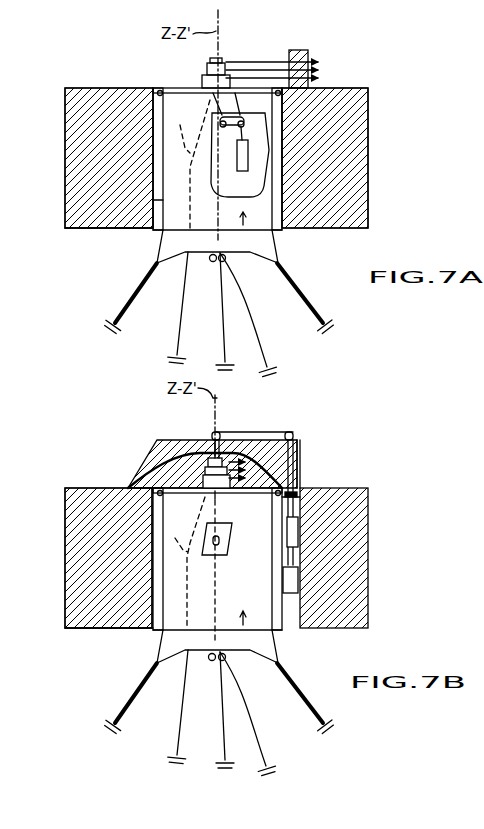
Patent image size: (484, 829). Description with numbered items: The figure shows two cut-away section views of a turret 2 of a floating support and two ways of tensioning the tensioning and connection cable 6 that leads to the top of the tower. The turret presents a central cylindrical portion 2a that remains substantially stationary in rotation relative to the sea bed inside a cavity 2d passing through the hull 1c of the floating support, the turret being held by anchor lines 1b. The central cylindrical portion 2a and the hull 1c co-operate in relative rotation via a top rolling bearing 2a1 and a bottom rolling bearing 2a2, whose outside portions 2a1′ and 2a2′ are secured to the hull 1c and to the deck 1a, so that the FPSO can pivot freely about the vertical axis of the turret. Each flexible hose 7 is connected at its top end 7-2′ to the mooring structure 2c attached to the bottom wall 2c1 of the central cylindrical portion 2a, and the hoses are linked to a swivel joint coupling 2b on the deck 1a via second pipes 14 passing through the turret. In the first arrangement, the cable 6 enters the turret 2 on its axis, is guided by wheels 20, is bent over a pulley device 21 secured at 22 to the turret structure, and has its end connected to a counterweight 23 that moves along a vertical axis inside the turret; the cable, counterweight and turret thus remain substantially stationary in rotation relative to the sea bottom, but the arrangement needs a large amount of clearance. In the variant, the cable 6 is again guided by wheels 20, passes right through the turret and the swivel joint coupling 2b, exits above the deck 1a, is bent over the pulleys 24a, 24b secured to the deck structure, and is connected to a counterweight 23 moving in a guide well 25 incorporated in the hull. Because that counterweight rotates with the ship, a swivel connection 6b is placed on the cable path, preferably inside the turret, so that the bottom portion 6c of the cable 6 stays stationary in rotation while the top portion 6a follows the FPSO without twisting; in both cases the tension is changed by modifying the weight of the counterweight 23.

In FIG. 7A, the turret 2 is at (50, 74).
In FIG. 7B, the turret 2 is at (112, 471).
In FIG. 7A, the central cylindrical portion 2a is at (160, 166).
In FIG. 7B, the central cylindrical portion 2a is at (163, 583).
In FIG. 7A, the top rolling bearing 2a1 is at (155, 80).
In FIG. 7B, the top rolling bearing 2a1 is at (145, 504).
In FIG. 7A, the outside portion of top rolling bearing 2a1′ is at (152, 97).
In FIG. 7B, the outside portion of top rolling bearing 2a1′ is at (150, 497).
In FIG. 7A, the bottom rolling bearing 2a2 is at (163, 232).
In FIG. 7B, the bottom rolling bearing 2a2 is at (162, 631).
In FIG. 7A, the outside portion of bottom rolling bearing 2a2′ is at (121, 226).
In FIG. 7A, the swivel joint coupling 2b is at (205, 77).
In FIG. 7B, the swivel joint coupling 2b is at (165, 463).
In FIG. 7A, the mooring structure 2c is at (263, 237).
In FIG. 7B, the mooring structure 2c is at (263, 637).
In FIG. 7A, the bottom wall 2c1 is at (163, 218).
In FIG. 7B, the bottom wall 2c1 is at (162, 635).
In FIG. 7A, the cavity 2d is at (160, 132).
In FIG. 7B, the cavity 2d is at (308, 548).
In FIG. 7A, the deck 1a is at (331, 88).
In FIG. 7A, the anchor line 1b is at (123, 308).
In FIG. 7B, the anchor line 1b is at (125, 702).
In FIG. 7A, the hull 1c is at (352, 153).
In FIG. 7A, the tensioning and connection cable 6 is at (370, 91).
In FIG. 7B, the tensioning and connection cable 6 is at (302, 472).
In FIG. 7B, the top portion of the cable 6a is at (215, 508).
In FIG. 7B, the swivel connection 6b is at (219, 538).
In FIG. 7B, the bottom portion of the cable 6c is at (217, 582).
In FIG. 7A, the flexible hose 7 is at (180, 337).
In FIG. 7B, the flexible hose 7 is at (178, 733).
In FIG. 7A, the top end of flexible hose 7-2′ is at (185, 258).
In FIG. 7B, the top end of flexible hose 7-2′ is at (182, 656).
In FIG. 7A, the second pipes 14 is at (383, 218).
In FIG. 7B, the second pipes 14 is at (207, 562).
In FIG. 7A, the wheels 20 is at (221, 264).
In FIG. 7B, the wheels 20 is at (221, 662).
In FIG. 7A, the pulley device 21 is at (302, 82).
In FIG. 7A, the securing point of pulley device 22 is at (233, 98).
In FIG. 7A, the counterweight 23 is at (244, 128).
In FIG. 7B, the counterweight 23 is at (298, 533).
In FIG. 7B, the pulley 24a is at (215, 432).
In FIG. 7B, the pulley 24b is at (294, 432).
In FIG. 7B, the guide well 25 is at (298, 578).